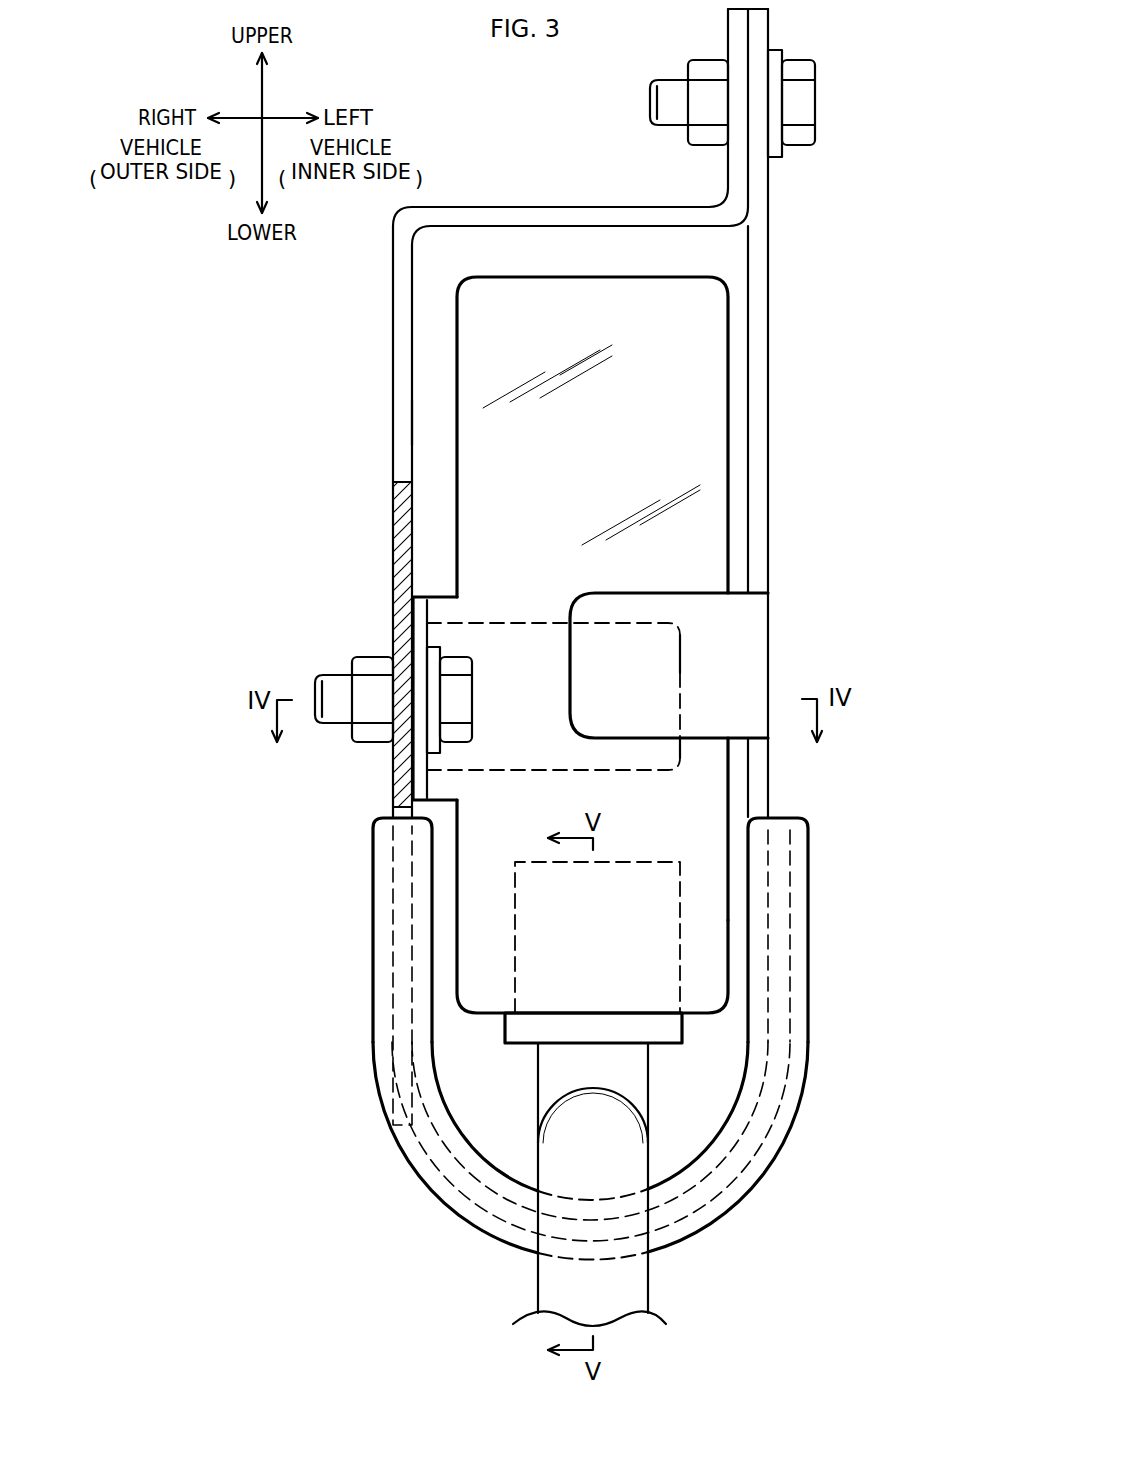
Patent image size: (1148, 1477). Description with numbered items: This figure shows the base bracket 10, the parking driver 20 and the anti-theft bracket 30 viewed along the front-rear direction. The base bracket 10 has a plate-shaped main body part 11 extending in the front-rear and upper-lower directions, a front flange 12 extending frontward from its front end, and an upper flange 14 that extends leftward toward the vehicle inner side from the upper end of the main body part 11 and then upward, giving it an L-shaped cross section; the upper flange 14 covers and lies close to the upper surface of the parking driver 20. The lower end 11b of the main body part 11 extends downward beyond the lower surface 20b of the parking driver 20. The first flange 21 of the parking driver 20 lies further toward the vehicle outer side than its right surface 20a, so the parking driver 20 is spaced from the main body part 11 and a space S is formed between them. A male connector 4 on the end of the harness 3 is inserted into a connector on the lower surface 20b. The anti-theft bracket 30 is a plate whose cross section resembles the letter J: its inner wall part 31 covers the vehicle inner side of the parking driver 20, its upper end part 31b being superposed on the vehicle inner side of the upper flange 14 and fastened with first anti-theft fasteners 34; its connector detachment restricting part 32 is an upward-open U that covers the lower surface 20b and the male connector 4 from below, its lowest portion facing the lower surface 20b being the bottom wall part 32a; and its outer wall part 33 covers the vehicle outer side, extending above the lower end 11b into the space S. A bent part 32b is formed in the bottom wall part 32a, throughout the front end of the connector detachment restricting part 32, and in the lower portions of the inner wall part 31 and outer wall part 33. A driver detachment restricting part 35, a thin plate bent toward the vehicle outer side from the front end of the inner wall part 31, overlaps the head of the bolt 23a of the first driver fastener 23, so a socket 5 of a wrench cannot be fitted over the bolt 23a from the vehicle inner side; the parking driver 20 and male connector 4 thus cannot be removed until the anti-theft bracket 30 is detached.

The harness 3 is at (617, 1283).
The male connector 4 is at (658, 1032).
The socket 5 is at (683, 668).
The base bracket 10 is at (533, 567).
The main body part 11 is at (365, 666).
The lower end 11b is at (408, 1083).
The front flange 12 is at (403, 548).
The upper flange 14 is at (587, 215).
The parking driver 20 is at (594, 637).
The right surface 20a is at (452, 378).
The lower surface 20b is at (690, 1020).
The first flange 21 is at (420, 606).
The first driver fastener 23 is at (412, 742).
The bolt 23a is at (462, 690).
The anti-theft bracket 30 is at (619, 679).
The inner wall part 31 is at (792, 525).
The upper end part 31b is at (770, 38).
The connector detachment restricting part 32 is at (578, 1084).
The bottom wall part 32a is at (573, 1185).
The bent part 32b is at (460, 1198).
The outer wall part 33 is at (438, 914).
The first anti-theft fastener 34 is at (800, 98).
The driver detachment restricting part 35 is at (620, 610).
The space S is at (437, 423).